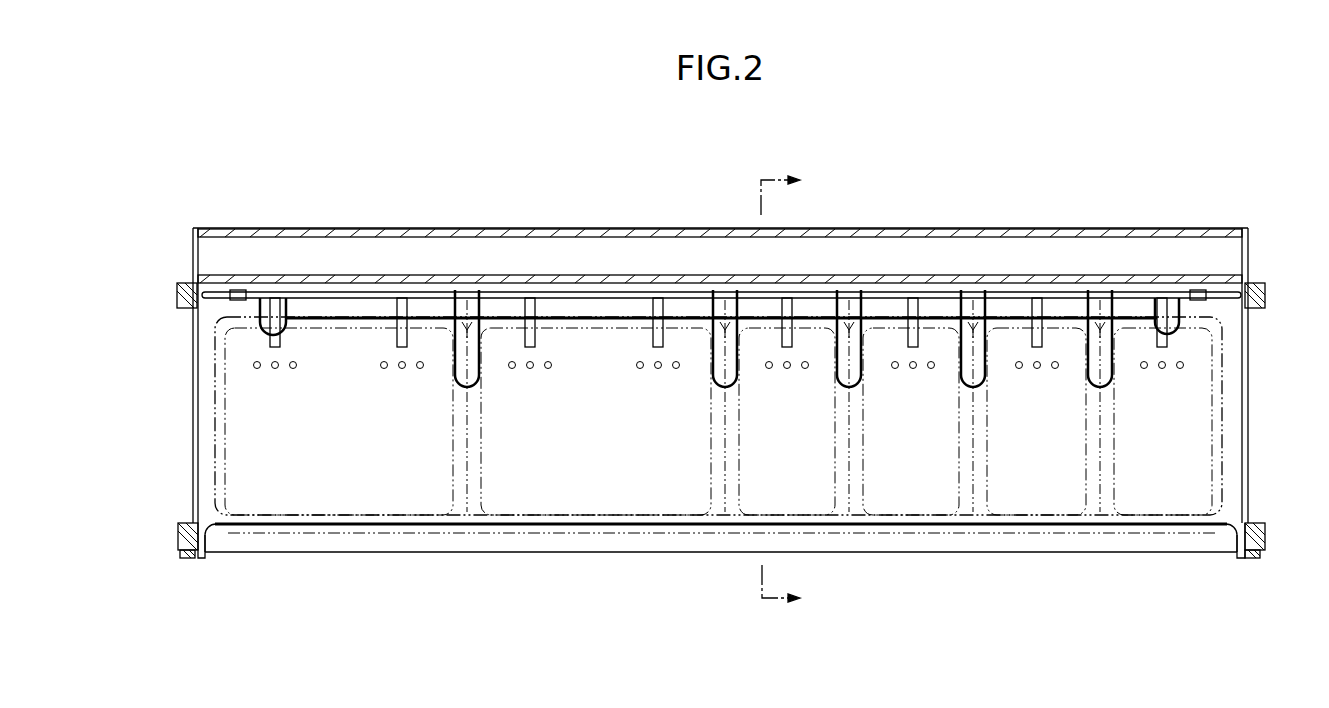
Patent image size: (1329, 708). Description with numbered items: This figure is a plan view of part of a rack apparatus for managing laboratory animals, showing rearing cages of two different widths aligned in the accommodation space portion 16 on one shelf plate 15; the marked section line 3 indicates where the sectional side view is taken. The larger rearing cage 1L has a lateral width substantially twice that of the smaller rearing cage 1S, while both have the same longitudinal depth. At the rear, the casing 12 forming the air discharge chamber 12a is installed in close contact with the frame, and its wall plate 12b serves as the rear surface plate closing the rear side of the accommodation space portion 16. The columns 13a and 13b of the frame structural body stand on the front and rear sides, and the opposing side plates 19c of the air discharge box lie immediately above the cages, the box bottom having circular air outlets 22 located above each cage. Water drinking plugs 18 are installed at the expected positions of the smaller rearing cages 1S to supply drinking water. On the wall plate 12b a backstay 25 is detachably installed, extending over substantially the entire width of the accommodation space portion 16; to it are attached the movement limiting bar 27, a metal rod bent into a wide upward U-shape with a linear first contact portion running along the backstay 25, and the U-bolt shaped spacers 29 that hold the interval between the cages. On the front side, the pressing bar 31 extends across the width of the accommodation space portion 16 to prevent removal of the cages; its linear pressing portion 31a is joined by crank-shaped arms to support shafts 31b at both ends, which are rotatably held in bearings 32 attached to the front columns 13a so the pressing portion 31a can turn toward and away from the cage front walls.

The casing 12 is at (378, 228).
The air discharge chamber 12a is at (458, 256).
The wall plate 12b is at (955, 283).
The column 13a is at (181, 523).
The column 13b is at (177, 292).
The side plate 19c is at (192, 336).
The backstay 25 is at (300, 296).
The movement limiting bar 27 is at (597, 330).
The water drinking plug 18 is at (395, 343).
The air outlet 22 is at (276, 370).
The spacer 29 is at (454, 372).
The rearing cage having a larger lateral width dimension 1L is at (289, 540).
The rearing cage having a smaller lateral width dimension 1S is at (752, 540).
The pressing bar 31 is at (417, 526).
The pressing portion 31a is at (508, 540).
The support shaft 31b is at (203, 560).
The bearing 32 is at (185, 558).
The shelf plate 15 is at (345, 495).
The accommodation space portion 16 is at (641, 490).
The section line 3 is at (794, 393).